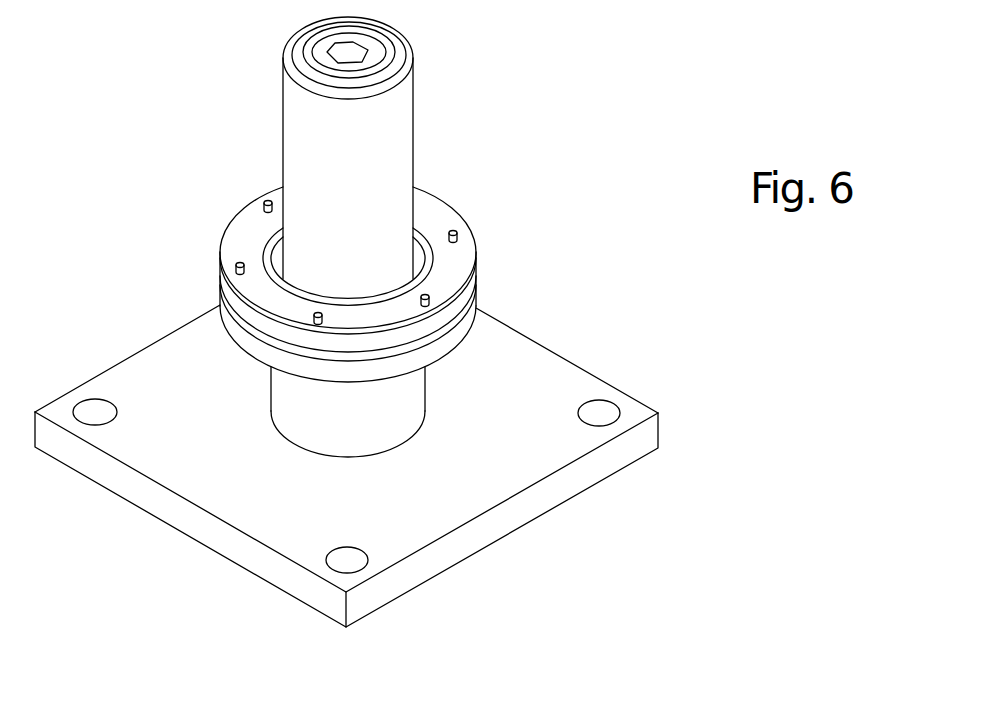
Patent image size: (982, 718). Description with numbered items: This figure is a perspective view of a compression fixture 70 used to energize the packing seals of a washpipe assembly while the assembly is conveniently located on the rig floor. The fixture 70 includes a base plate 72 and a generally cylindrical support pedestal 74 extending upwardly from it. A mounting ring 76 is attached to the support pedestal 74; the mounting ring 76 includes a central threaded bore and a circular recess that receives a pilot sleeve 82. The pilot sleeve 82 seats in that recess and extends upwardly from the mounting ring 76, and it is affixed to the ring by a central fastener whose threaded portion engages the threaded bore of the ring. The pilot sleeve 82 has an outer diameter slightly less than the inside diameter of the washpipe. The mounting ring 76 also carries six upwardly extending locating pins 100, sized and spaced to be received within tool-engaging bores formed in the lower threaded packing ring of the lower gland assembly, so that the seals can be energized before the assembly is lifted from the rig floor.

The compression fixture 70 is at (594, 148).
The base plate 72 is at (563, 372).
The support pedestal 74 is at (400, 405).
The mounting ring 76 is at (477, 282).
The pilot sleeve 82 is at (405, 125).
The locating pins 100 is at (266, 201).